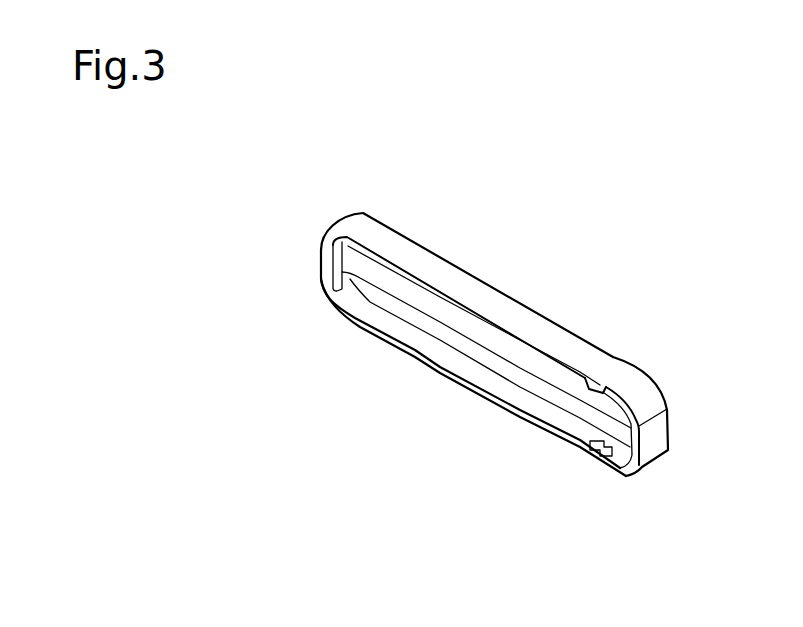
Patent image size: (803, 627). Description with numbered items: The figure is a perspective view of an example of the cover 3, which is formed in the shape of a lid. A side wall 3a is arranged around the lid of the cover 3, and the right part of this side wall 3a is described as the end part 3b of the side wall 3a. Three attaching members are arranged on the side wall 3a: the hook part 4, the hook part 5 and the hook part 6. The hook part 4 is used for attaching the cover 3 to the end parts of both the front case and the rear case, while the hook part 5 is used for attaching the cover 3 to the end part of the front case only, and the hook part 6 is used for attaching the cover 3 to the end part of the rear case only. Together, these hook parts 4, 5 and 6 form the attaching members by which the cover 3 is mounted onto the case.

The cover 3 is at (447, 256).
The side wall 3a is at (446, 376).
The end part of the side wall 3b is at (628, 458).
The hook part 4 is at (322, 271).
The hook part 5 is at (595, 388).
The hook part 6 is at (590, 457).